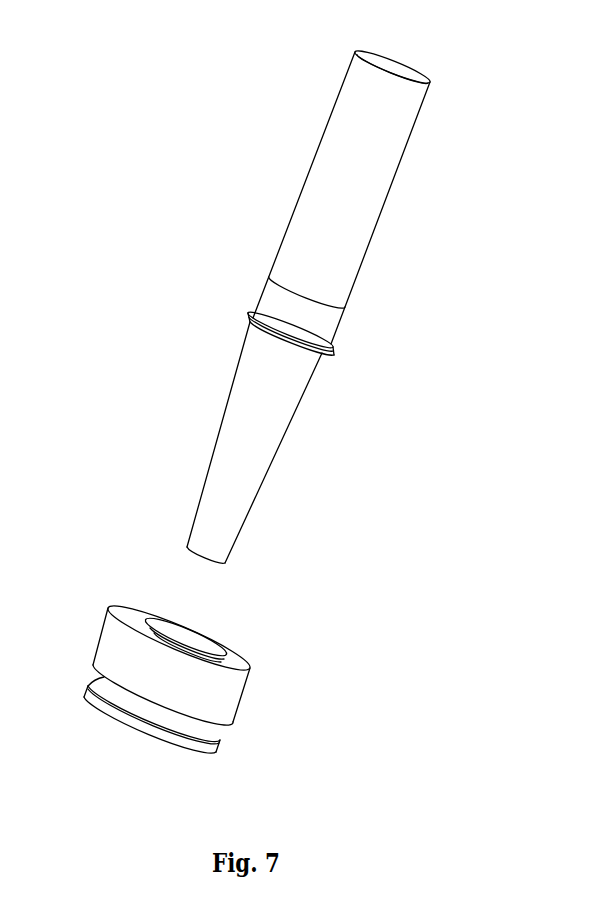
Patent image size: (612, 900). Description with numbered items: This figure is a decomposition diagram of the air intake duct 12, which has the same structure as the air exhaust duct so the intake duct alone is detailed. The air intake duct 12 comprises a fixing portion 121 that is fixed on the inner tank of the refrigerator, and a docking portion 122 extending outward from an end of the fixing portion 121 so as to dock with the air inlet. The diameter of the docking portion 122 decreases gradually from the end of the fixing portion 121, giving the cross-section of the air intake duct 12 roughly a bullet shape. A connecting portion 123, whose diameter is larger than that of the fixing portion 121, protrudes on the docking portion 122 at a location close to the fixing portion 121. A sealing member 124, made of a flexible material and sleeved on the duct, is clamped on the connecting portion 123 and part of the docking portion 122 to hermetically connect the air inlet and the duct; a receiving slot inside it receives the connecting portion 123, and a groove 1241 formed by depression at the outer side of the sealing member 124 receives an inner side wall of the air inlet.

The air intake duct 12 is at (43, 45).
The fixing portion 121 is at (353, 218).
The docking portion 122 is at (253, 445).
The connecting portion 123 is at (310, 347).
The sealing member 124 is at (212, 690).
The groove 1241 is at (207, 728).